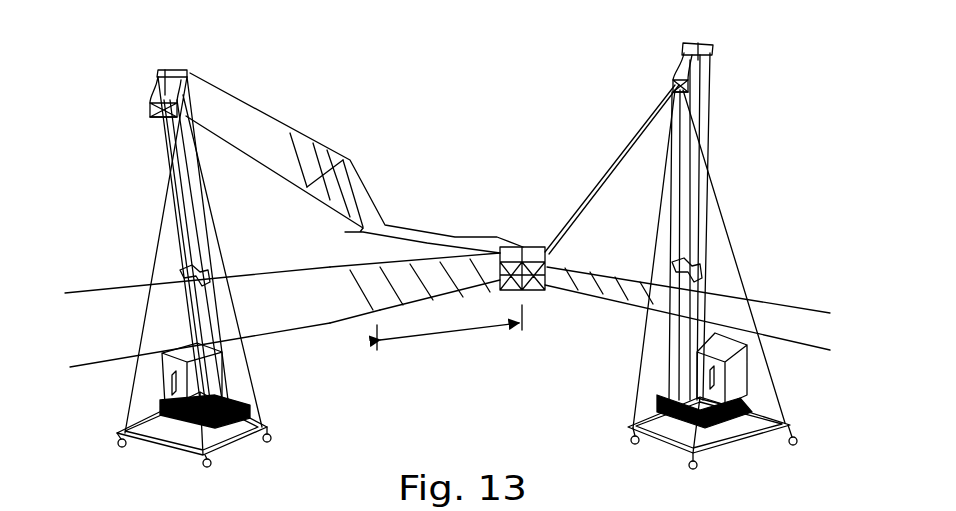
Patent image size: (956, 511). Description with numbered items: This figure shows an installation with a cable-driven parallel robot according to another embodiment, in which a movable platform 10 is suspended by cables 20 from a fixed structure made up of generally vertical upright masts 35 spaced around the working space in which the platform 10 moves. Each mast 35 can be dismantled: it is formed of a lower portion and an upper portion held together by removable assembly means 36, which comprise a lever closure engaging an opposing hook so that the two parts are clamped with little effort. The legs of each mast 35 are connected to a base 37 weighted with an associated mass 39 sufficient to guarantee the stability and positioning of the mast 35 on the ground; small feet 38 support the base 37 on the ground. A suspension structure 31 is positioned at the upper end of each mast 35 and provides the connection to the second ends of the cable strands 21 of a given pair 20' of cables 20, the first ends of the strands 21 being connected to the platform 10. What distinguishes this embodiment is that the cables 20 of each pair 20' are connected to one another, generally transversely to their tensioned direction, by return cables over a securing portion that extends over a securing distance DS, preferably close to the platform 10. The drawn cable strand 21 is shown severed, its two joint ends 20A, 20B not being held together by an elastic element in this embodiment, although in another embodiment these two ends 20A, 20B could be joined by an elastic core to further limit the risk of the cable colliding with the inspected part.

The movable platform 10 is at (542, 298).
The cable 20 is at (354, 153).
The joint end of severed cable strand 20A is at (478, 222).
The joint end of severed cable strand 20B is at (357, 229).
The pair of cables 20' is at (447, 230).
The cable strand 21 is at (278, 120).
The suspension structure 31 is at (168, 97).
The mast 35 is at (150, 88).
The assembly means 36 is at (703, 262).
The base 37 is at (650, 443).
The leveling foot 38 is at (122, 447).
The mass 39 is at (737, 365).
The securing distance DS is at (450, 332).